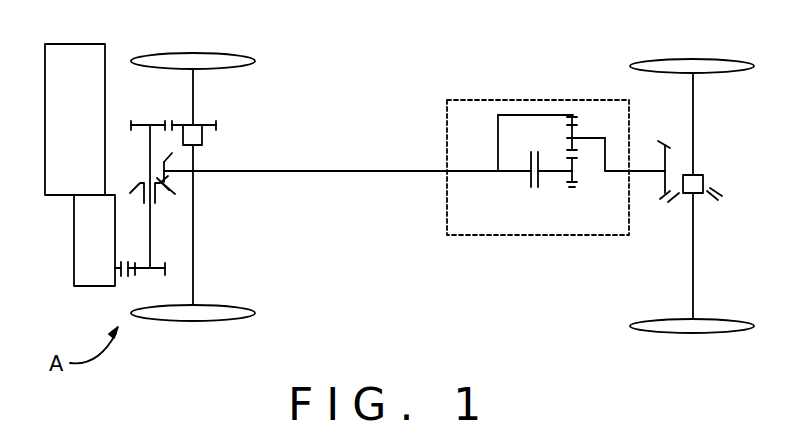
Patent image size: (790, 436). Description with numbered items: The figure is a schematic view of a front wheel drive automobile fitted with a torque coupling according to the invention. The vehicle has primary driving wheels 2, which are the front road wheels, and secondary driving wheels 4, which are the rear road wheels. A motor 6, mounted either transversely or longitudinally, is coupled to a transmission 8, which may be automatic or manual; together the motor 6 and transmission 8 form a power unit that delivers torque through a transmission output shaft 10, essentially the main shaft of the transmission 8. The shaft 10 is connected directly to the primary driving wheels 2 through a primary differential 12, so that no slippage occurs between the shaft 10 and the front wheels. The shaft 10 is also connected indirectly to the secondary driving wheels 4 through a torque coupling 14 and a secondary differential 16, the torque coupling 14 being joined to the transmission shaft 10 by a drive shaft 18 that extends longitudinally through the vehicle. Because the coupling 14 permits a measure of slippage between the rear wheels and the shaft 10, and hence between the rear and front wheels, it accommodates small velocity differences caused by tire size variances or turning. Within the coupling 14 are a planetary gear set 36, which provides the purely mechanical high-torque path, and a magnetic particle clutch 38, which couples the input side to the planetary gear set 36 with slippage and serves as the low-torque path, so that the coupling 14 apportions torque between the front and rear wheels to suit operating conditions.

The primary driving wheels 2 is at (190, 60).
The secondary driving wheels 4 is at (680, 62).
The motor 6 is at (55, 126).
The transmission 8 is at (87, 252).
The transmission output shaft 10 is at (121, 278).
The primary differential 12 is at (200, 137).
The torque coupling 14 is at (520, 226).
The secondary differential 16 is at (705, 183).
The drive shaft 18 is at (331, 174).
The planetary gear set 36 is at (578, 119).
The magnetic particle clutch 38 is at (535, 190).